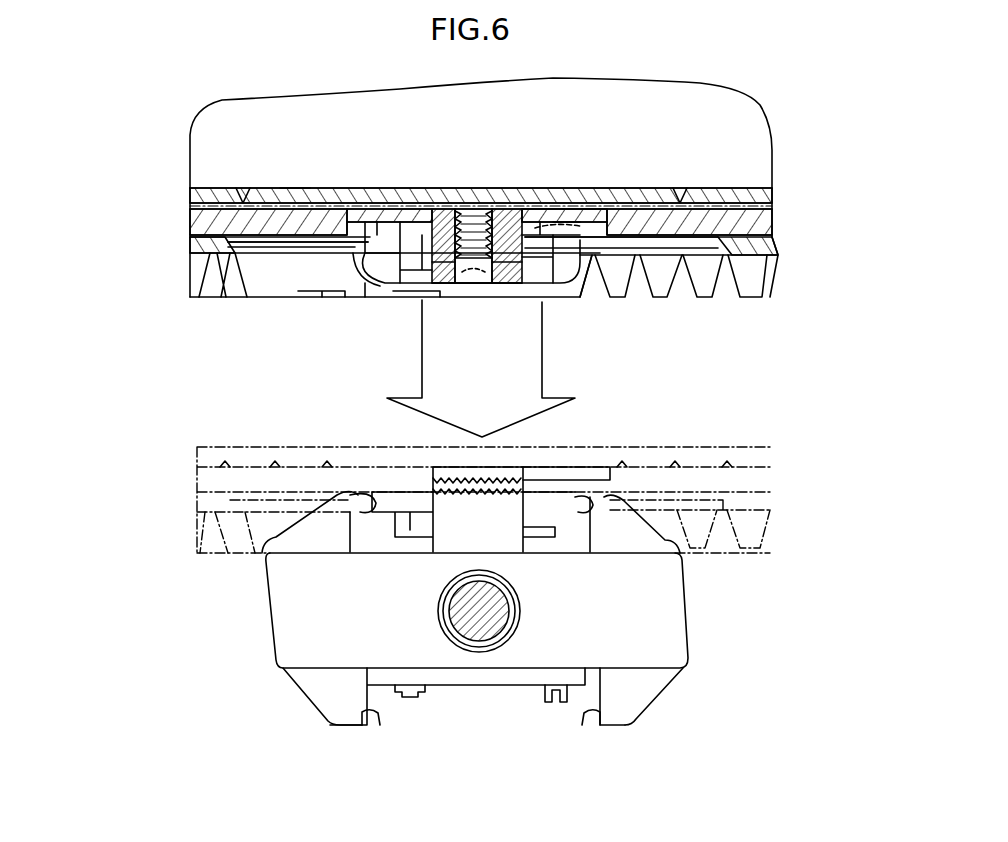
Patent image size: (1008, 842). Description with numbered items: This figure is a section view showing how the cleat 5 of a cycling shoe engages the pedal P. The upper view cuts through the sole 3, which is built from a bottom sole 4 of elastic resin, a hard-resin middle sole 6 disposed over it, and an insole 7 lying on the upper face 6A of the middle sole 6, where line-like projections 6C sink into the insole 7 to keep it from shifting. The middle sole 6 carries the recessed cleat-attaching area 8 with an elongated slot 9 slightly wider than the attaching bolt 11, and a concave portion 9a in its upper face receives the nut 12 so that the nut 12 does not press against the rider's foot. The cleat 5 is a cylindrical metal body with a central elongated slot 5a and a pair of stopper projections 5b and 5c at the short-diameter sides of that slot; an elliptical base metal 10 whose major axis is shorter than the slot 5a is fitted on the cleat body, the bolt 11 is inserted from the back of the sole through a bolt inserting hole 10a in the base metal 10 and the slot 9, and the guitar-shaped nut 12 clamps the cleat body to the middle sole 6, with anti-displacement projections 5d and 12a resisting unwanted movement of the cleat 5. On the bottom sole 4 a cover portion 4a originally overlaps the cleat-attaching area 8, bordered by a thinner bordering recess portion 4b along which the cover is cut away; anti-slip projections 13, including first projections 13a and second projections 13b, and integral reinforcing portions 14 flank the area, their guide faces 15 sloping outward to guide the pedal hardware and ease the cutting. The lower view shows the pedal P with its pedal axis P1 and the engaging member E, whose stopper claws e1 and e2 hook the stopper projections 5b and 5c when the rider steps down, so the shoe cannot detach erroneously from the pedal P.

The sole 3 is at (178, 213).
The bottom sole 4 is at (777, 257).
The cover portion 4a is at (792, 309).
The bordering recess portion 4b is at (224, 296).
The cleat 5 is at (388, 262).
The elongated slot 5a is at (458, 298).
The stopper projection 5b is at (362, 289).
The stopper projection 5c is at (583, 297).
The anti-displacement projection 5d is at (388, 228).
The middle sole 6 is at (770, 213).
The upper face 6A is at (743, 188).
The line-like projections 6C is at (243, 188).
The insole 7 is at (292, 186).
The cleat-attaching area 8 is at (552, 212).
The elongated slot 9 is at (378, 222).
The concave portion 9a is at (597, 238).
The base metal 10 is at (444, 284).
The bolt inserting hole 10a is at (505, 284).
The attaching bolt 11 is at (476, 217).
The nut 12 is at (444, 206).
The anti-displacement projection 12a is at (560, 222).
The anti-slip projections 13 is at (483, 317).
The first projections 13a is at (221, 296).
The second projections 13b is at (708, 297).
The reinforcing portions 14 is at (306, 298).
The guide face 15 is at (367, 298).
The engaging member E is at (273, 535).
The stopper claw e1 is at (355, 495).
The stopper claw e2 is at (581, 493).
The pedal P is at (688, 633).
The pedal axis P1 is at (512, 604).